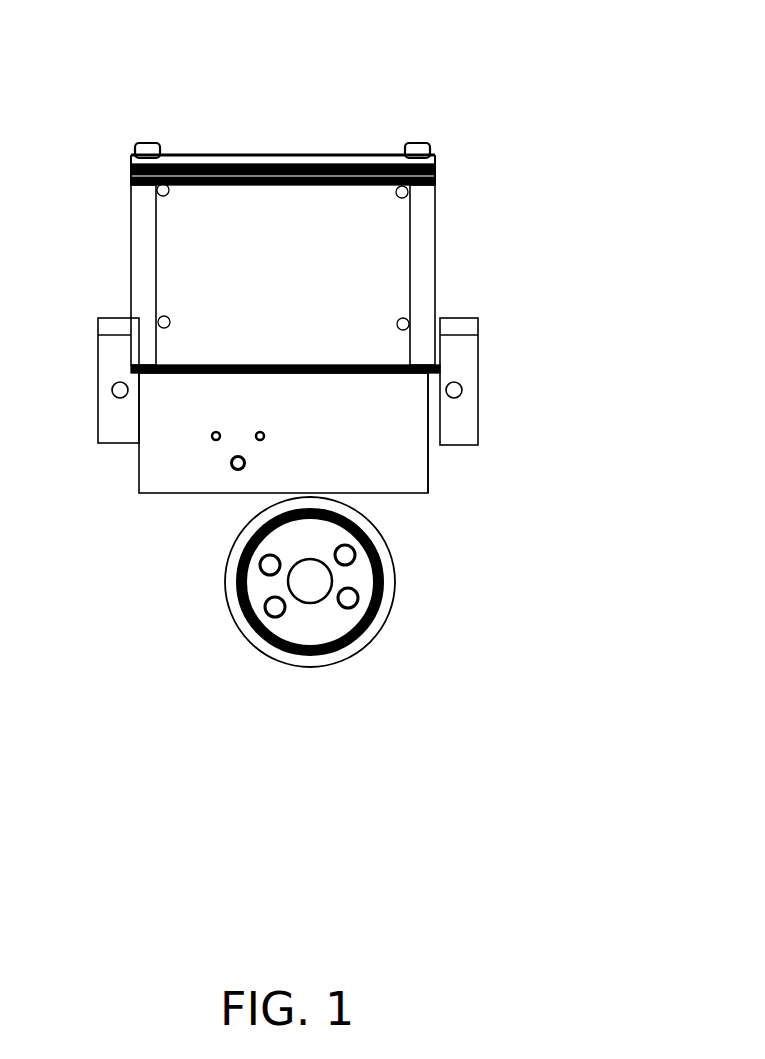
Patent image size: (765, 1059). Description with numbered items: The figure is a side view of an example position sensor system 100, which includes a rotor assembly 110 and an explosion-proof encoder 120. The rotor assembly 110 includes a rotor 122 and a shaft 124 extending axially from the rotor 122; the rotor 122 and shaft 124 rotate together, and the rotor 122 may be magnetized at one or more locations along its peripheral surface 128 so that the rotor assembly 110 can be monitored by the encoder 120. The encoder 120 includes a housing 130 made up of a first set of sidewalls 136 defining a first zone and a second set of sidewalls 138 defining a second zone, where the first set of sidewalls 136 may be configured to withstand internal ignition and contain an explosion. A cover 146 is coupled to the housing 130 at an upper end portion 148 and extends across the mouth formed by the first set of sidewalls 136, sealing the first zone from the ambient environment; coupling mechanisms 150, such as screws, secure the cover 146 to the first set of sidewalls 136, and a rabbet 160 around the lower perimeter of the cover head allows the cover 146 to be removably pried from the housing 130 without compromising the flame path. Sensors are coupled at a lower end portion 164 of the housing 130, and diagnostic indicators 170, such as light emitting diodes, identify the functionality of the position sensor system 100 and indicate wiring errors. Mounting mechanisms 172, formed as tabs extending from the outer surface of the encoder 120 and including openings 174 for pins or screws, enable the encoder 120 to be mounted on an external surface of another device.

The position sensor system 100 is at (557, 772).
The rotor assembly 110 is at (236, 697).
The explosion-proof encoder 120 is at (490, 55).
The rotor 122 is at (322, 650).
The shaft 124 is at (305, 590).
The peripheral surface 128 is at (383, 522).
The housing 130 is at (421, 240).
The first set of sidewalls 136 is at (140, 282).
The second set of sidewalls 138 is at (168, 475).
The cover 146 is at (287, 146).
The upper end portion 148 is at (127, 179).
The coupling mechanisms 150 is at (144, 140).
The rabbet 160 is at (445, 172).
The lower end portion 164 is at (440, 477).
The diagnostic indicators 170 is at (240, 458).
The mounting mechanisms 172 is at (114, 432).
The openings 174 is at (117, 386).